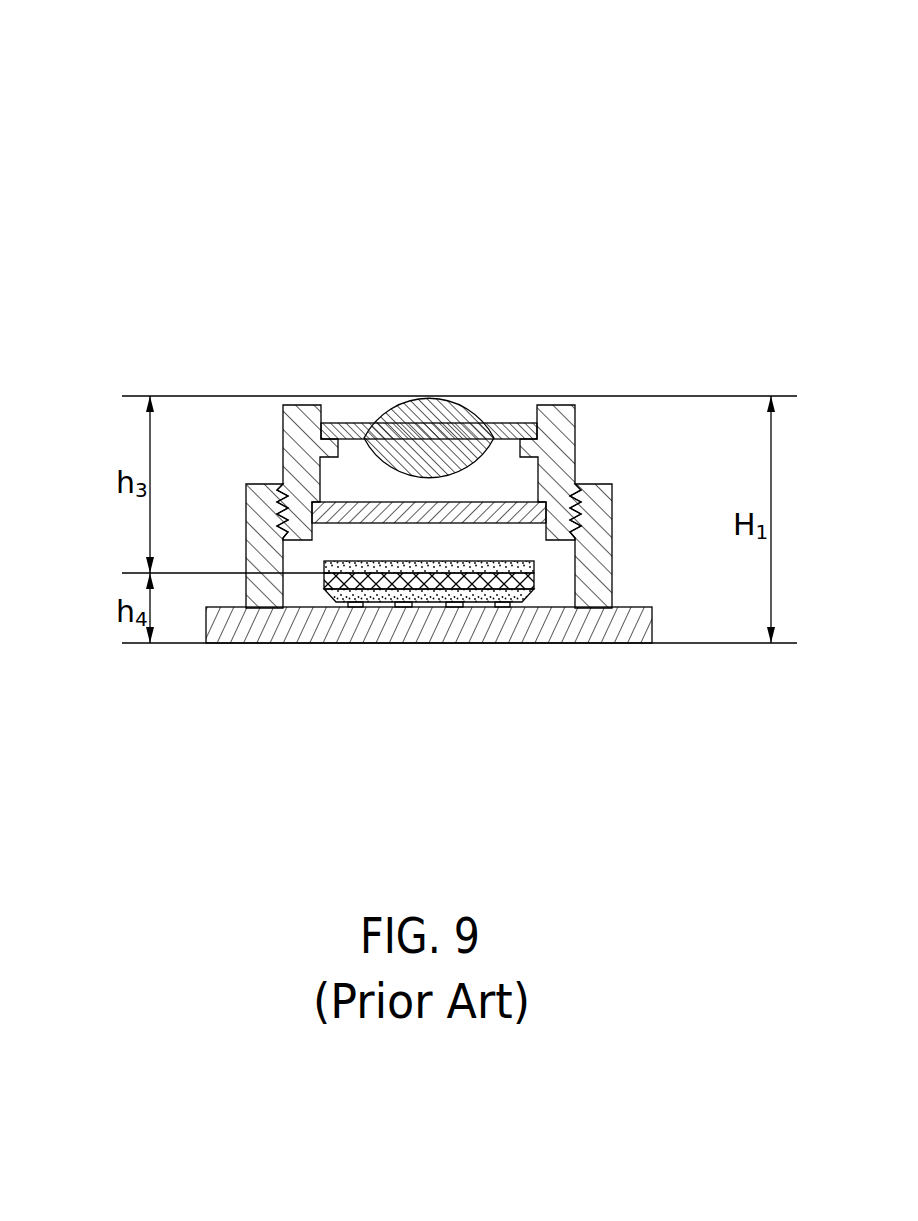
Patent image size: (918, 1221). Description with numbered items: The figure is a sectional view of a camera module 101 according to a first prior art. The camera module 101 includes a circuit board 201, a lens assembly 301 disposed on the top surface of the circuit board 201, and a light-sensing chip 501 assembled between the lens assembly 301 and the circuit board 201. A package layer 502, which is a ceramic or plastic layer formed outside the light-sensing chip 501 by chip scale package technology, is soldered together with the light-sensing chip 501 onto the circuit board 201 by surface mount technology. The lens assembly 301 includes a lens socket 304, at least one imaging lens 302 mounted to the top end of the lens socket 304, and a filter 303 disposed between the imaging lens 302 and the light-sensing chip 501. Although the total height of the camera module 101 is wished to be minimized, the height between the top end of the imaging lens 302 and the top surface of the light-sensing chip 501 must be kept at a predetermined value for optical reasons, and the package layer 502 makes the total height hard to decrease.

The camera module 101 is at (104, 44).
The circuit board 201 is at (568, 638).
The lens assembly 301 is at (478, 407).
The imaging lens 302 is at (430, 398).
The filter 303 is at (540, 508).
The lens socket 304 is at (547, 405).
The light-sensing chip 501 is at (420, 578).
The package layer 502 is at (352, 563).